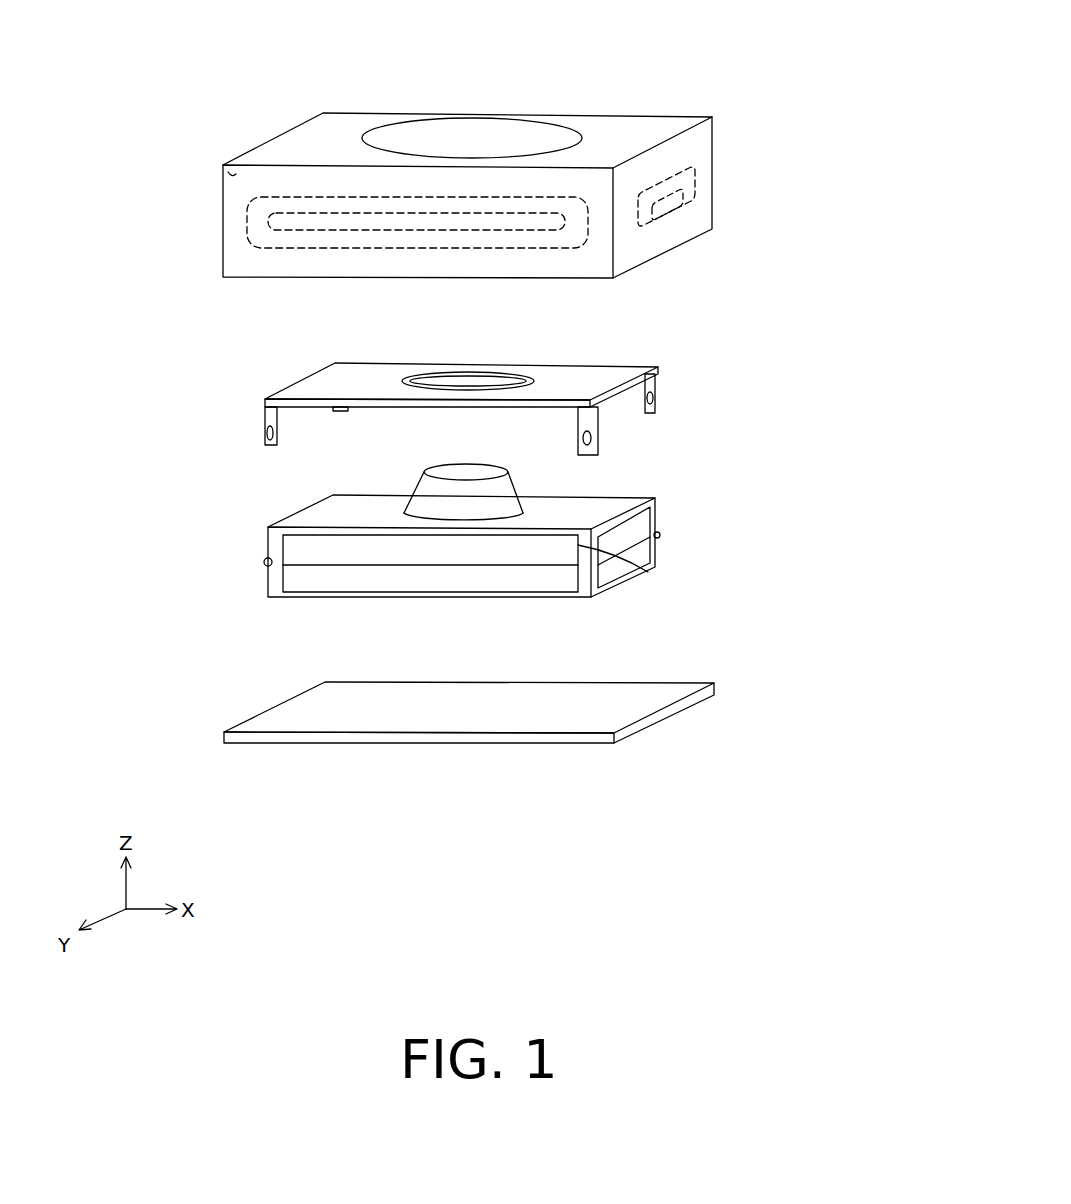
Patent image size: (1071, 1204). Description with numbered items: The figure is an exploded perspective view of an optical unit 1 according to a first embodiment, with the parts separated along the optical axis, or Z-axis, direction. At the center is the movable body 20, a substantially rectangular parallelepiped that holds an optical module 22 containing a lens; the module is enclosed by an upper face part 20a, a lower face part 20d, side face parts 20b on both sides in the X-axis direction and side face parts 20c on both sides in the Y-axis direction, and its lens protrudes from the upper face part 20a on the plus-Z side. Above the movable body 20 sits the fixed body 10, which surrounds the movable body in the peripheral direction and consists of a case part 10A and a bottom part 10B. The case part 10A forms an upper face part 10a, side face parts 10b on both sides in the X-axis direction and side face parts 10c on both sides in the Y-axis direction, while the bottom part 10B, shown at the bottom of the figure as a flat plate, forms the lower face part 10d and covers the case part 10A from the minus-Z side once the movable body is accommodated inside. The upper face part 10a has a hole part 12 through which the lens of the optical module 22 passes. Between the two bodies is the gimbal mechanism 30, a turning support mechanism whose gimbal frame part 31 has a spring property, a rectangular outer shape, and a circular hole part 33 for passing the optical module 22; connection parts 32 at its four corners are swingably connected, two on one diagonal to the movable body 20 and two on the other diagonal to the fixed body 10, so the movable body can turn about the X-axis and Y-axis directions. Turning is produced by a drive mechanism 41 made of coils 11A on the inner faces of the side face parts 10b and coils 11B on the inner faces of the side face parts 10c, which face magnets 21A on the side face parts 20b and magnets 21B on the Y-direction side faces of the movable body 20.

The optical unit 1 is at (816, 74).
The fixed body 10 is at (125, 645).
The case part 10A is at (222, 200).
The bottom part 10B is at (285, 690).
The upper face part 10a is at (610, 127).
The side face parts 10b is at (703, 124).
The side face parts 10c is at (231, 163).
The lower face part 10d is at (463, 745).
The coil 11A is at (697, 192).
The coil 11B is at (588, 232).
The hole part 12 is at (448, 134).
The movable body 20 is at (300, 510).
The upper face part 20a is at (338, 512).
The side face parts 20b is at (651, 497).
The side face parts 20c is at (264, 563).
The lower face part 20d is at (598, 598).
The magnet 21A is at (650, 568).
The magnet 21B is at (640, 570).
The optical module 22 is at (425, 470).
The gimbal mechanism 30 is at (327, 372).
The gimbal frame part 31 is at (400, 363).
The connection parts 32 is at (660, 388).
The circular hole part 33 is at (476, 378).
The drive mechanism 41 is at (798, 183).